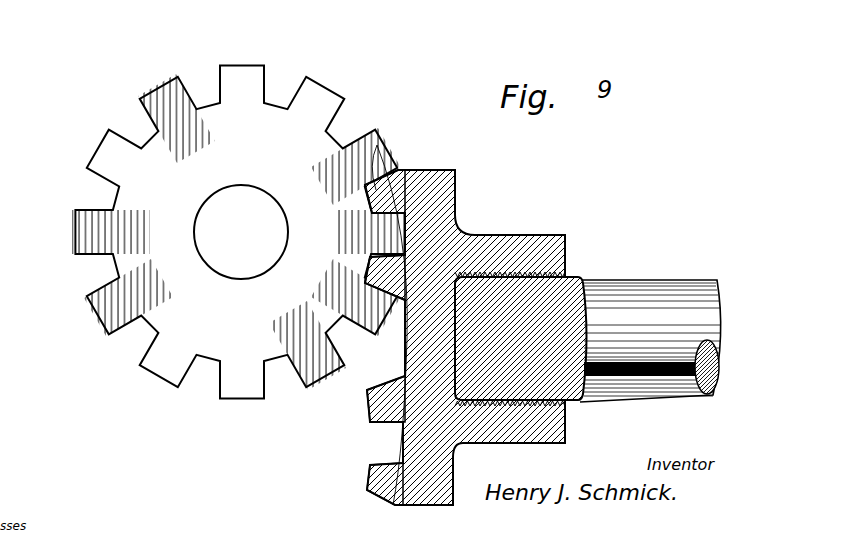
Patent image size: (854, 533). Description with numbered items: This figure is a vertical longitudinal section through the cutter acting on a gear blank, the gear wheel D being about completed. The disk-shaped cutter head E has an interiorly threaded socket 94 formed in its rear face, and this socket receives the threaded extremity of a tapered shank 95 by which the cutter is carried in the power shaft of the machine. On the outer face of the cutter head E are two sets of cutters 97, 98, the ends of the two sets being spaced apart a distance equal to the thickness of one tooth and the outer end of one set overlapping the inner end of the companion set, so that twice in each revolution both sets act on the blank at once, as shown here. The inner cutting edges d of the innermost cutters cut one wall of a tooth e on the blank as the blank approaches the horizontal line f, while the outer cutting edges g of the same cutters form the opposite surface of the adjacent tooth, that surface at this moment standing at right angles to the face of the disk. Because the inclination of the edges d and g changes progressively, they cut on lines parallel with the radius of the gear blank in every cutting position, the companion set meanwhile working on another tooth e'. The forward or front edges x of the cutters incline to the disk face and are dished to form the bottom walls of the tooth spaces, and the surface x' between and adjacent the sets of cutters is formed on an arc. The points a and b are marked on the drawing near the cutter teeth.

The gear wheel D is at (128, 270).
The disk-shaped cutter head E is at (456, 214).
The interiorly threaded socket 94 is at (559, 273).
The tapered shank 95 is at (662, 293).
The cutters 97 is at (365, 197).
The cutters 98 is at (368, 263).
The outer cutting edges g is at (377, 147).
The tooth e is at (349, 288).
The tooth e' is at (411, 168).
The inner cutting edges d is at (405, 205).
The forward or front edges x is at (343, 375).
The surface x' is at (465, 207).
The tooth point a is at (391, 319).
The tooth point b is at (392, 377).
The horizontal line f is at (395, 503).